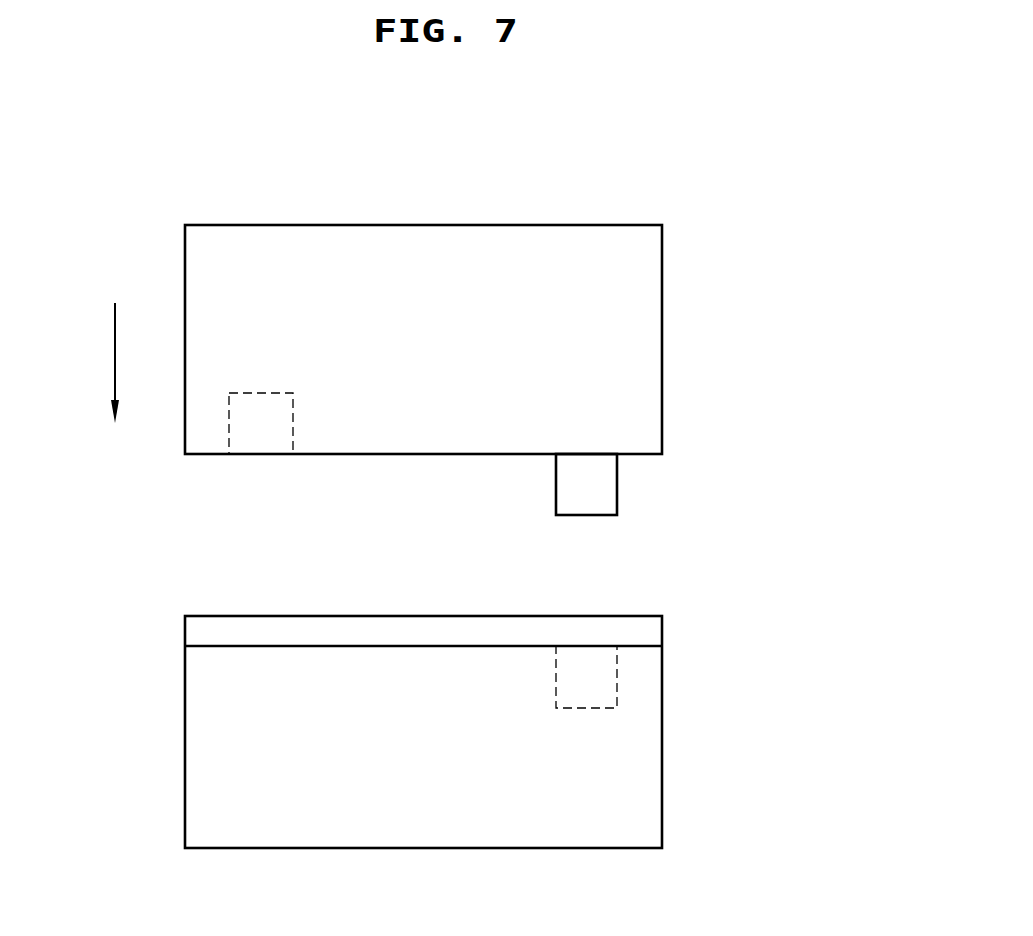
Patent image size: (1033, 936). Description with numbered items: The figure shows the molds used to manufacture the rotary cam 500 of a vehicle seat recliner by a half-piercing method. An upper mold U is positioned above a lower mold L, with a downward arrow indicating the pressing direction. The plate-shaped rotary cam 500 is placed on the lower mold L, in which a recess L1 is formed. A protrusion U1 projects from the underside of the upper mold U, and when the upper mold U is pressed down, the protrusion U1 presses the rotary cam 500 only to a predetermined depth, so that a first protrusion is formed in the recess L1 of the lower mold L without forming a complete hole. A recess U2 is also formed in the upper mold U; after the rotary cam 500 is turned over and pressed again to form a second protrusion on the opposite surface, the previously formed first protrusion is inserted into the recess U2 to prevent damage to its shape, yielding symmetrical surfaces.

The upper mold U is at (625, 305).
The protrusion of the upper mold U1 is at (607, 496).
The recess of the upper mold U2 is at (261, 393).
The lower mold L is at (647, 797).
The recess of the lower mold L1 is at (617, 690).
The rotary cam 500 is at (647, 633).